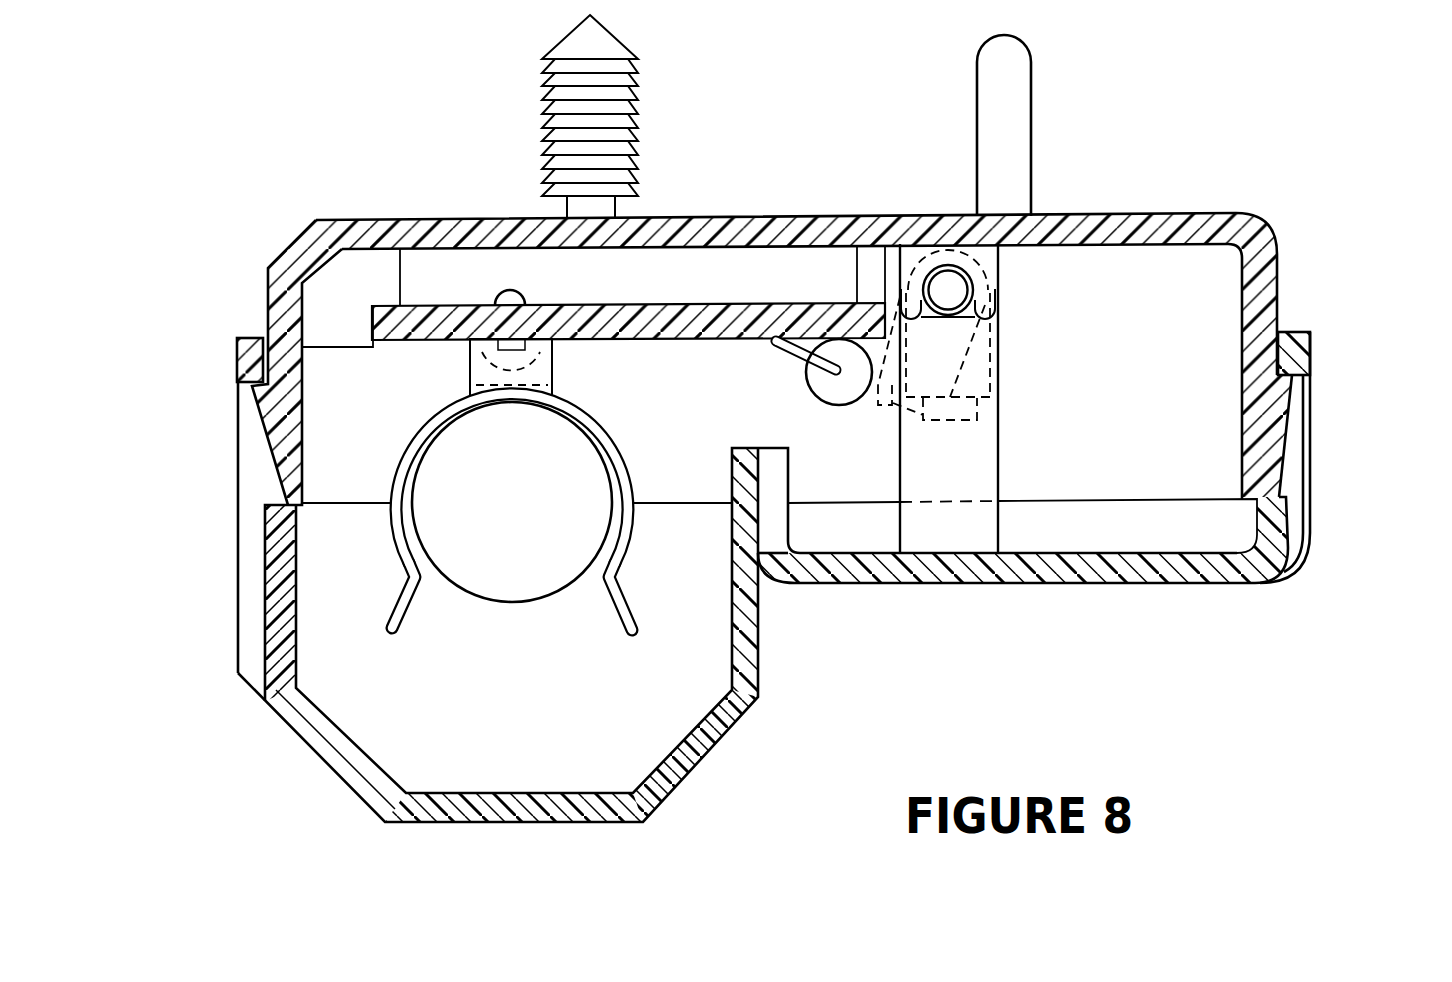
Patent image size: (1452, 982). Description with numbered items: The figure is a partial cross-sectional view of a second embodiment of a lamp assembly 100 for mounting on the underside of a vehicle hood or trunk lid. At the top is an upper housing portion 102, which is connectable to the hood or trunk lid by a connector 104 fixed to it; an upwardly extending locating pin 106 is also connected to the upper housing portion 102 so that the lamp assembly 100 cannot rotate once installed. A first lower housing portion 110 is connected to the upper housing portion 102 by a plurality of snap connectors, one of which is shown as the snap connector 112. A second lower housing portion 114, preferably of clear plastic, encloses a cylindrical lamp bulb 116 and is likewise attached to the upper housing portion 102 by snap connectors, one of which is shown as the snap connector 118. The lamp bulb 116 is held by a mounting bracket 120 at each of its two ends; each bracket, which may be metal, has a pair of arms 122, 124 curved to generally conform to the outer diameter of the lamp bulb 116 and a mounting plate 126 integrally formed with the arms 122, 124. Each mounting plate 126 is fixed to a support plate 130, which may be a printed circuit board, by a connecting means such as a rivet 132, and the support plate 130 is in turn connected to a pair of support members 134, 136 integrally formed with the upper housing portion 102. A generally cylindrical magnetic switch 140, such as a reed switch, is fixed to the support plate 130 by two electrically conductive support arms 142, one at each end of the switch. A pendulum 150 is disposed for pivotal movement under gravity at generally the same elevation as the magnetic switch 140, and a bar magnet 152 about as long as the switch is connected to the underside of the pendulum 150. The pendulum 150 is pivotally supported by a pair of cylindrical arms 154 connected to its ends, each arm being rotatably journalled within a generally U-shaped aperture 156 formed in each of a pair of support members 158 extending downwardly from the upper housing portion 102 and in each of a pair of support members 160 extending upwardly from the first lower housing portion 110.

The lamp assembly 100 is at (263, 233).
The upper housing portion 102 is at (742, 212).
The connector 104 is at (640, 122).
The locating pin 106 is at (975, 115).
The first lower housing portion 110 is at (1292, 333).
The snap connector 112 is at (1322, 488).
The second lower housing portion 114 is at (248, 336).
The cylindrical lamp bulb 116 is at (498, 605).
The snap connector 118 is at (221, 449).
The mounting bracket 120 is at (411, 413).
The arm 122 is at (407, 566).
The arm 124 is at (622, 560).
The mounting plate 126 is at (470, 372).
The support plate 130 is at (698, 300).
The rivet 132 is at (520, 296).
The support member 134 is at (402, 277).
The support member 136 is at (857, 275).
The magnetic switch 140 is at (827, 400).
The support arm 142 is at (783, 345).
The pendulum 150 is at (1000, 345).
The bar magnet 152 is at (977, 420).
The cylindrical arm 154 is at (932, 266).
The U-shaped aperture 156 is at (938, 320).
The support member 158 is at (1000, 275).
The support member 160 is at (1002, 483).